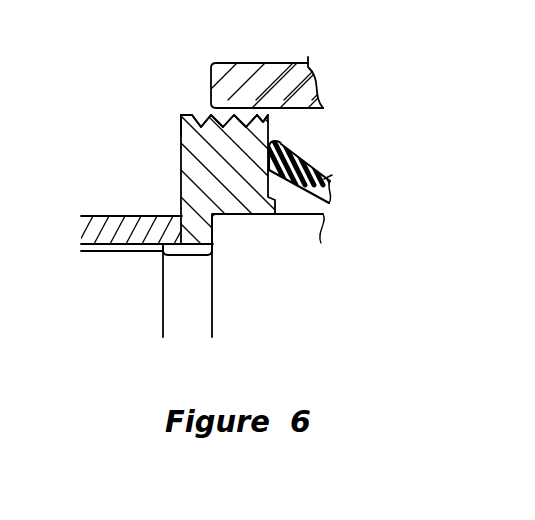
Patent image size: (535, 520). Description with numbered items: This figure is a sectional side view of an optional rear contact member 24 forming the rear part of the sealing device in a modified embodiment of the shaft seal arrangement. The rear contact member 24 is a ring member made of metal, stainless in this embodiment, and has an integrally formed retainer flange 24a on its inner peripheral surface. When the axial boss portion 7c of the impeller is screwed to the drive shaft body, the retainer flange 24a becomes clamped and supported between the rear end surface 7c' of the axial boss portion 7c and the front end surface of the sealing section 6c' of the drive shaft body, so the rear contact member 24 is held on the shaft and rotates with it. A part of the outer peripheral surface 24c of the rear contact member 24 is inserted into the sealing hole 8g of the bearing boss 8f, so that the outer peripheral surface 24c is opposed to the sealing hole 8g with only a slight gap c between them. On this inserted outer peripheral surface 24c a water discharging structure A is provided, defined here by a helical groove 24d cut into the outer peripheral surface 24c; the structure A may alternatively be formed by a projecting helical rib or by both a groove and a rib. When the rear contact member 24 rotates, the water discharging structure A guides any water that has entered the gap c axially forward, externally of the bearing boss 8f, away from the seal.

The sealing section 6c' is at (270, 275).
The axial boss portion 7c is at (135, 202).
The rear end surface 7c' is at (141, 205).
The rear contact member 24 is at (177, 158).
The retainer flange 24a is at (199, 247).
The outer peripheral surface 24c is at (184, 112).
The helical groove 24d is at (247, 118).
The water discharging structure A is at (163, 119).
The bearing boss 8f is at (300, 62).
The sealing hole 8g is at (297, 110).
The gap c is at (268, 110).